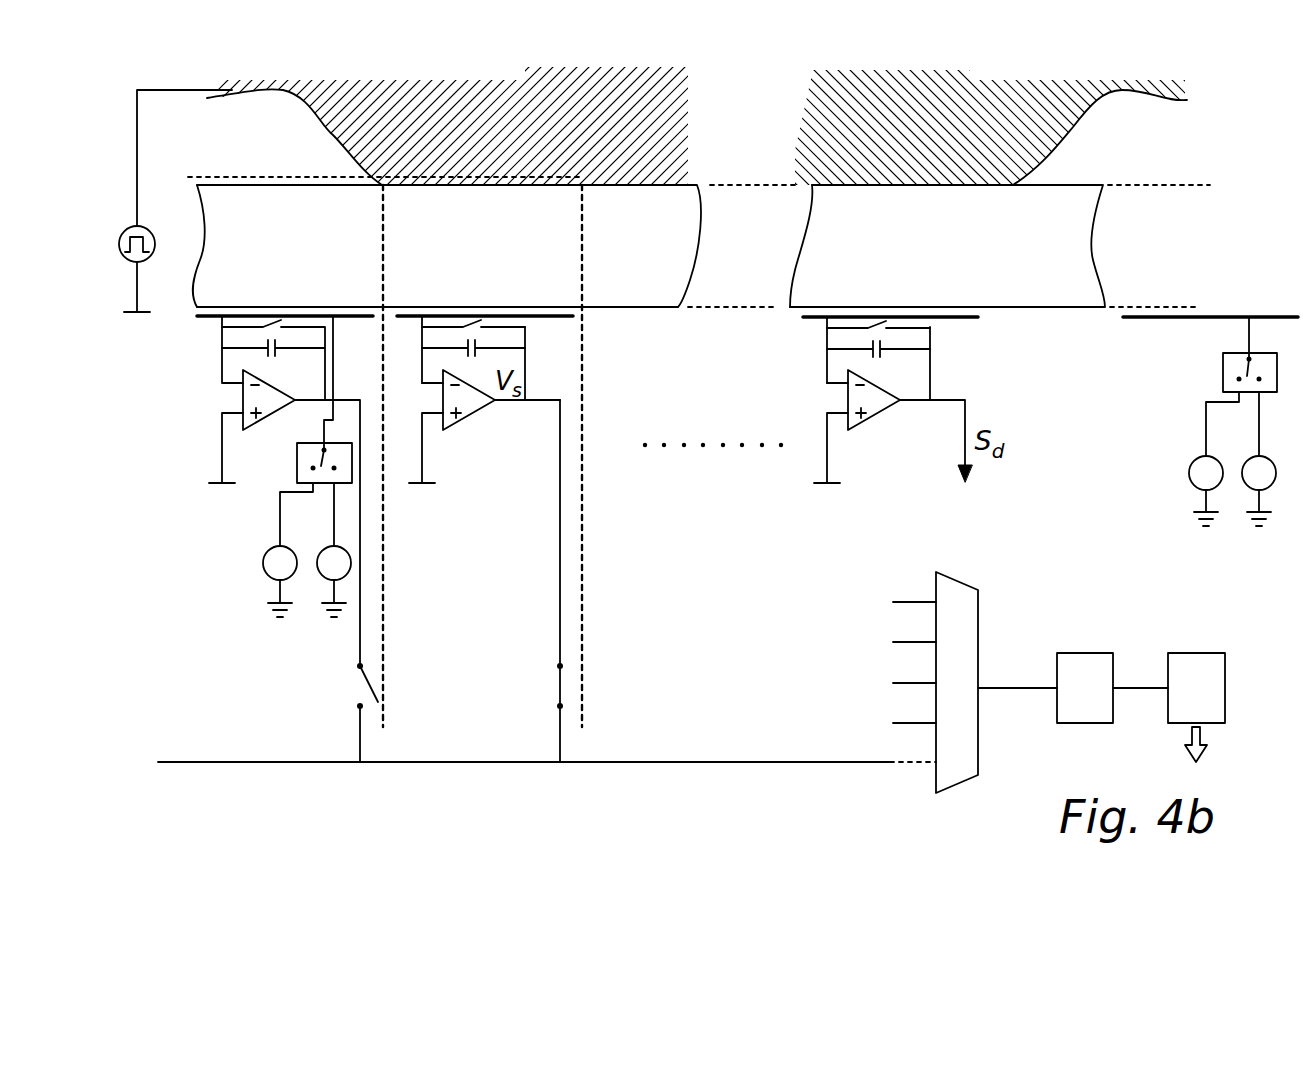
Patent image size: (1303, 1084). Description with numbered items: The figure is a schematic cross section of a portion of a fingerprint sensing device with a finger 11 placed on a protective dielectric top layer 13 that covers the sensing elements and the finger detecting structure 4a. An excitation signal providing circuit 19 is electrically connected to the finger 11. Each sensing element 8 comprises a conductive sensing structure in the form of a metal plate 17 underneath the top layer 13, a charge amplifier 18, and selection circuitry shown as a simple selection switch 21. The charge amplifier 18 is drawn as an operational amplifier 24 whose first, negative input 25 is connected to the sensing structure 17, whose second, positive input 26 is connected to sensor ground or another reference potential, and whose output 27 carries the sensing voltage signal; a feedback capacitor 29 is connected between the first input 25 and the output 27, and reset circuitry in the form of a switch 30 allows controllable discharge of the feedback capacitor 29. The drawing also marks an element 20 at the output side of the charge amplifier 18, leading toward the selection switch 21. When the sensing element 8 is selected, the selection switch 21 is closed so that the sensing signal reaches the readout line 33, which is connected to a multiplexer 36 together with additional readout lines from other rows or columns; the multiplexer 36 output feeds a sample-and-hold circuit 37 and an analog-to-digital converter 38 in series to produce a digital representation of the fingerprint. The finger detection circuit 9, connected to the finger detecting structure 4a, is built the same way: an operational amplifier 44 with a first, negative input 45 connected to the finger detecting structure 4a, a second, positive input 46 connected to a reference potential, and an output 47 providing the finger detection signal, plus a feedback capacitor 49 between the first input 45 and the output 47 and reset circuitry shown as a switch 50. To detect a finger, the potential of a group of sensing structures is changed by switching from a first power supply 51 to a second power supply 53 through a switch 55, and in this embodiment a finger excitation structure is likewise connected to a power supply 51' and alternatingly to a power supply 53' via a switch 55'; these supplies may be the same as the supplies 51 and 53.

The finger 11 is at (526, 129).
The protective dielectric top layer 13 is at (478, 244).
The sensing structure 17 is at (553, 315).
The excitation signal providing circuit 19 is at (128, 260).
The operational amplifier 24 is at (463, 380).
The first input 25 is at (443, 389).
The second input 26 is at (446, 416).
The output 27 is at (497, 402).
The charge amplifier 18 is at (461, 433).
The output line 20 is at (530, 418).
The selection switch 21 is at (550, 684).
The sensing element 8 is at (427, 734).
The readout line 33 is at (448, 762).
The feedback capacitor 29 is at (486, 338).
The reset circuitry 30 is at (480, 324).
The switch 55 is at (241, 489).
The first power supply 51 is at (221, 560).
The second power supply 53 is at (319, 574).
The operational amplifier 44 is at (885, 388).
The first input 45 is at (848, 388).
The second input 46 is at (849, 418).
The output 47 is at (936, 441).
The feedback capacitor 49 is at (897, 337).
The reset circuitry 50 is at (880, 318).
The finger detecting structure 4a is at (953, 316).
The finger detection circuit 9 is at (972, 382).
The multiplexer 36 is at (958, 580).
The sample-and-hold circuit 37 is at (1083, 653).
The analog-to-digital converter 38 is at (1196, 653).
The switch 55' is at (1163, 380).
The power supply 51' is at (1144, 469).
The power supply 53' is at (1244, 485).